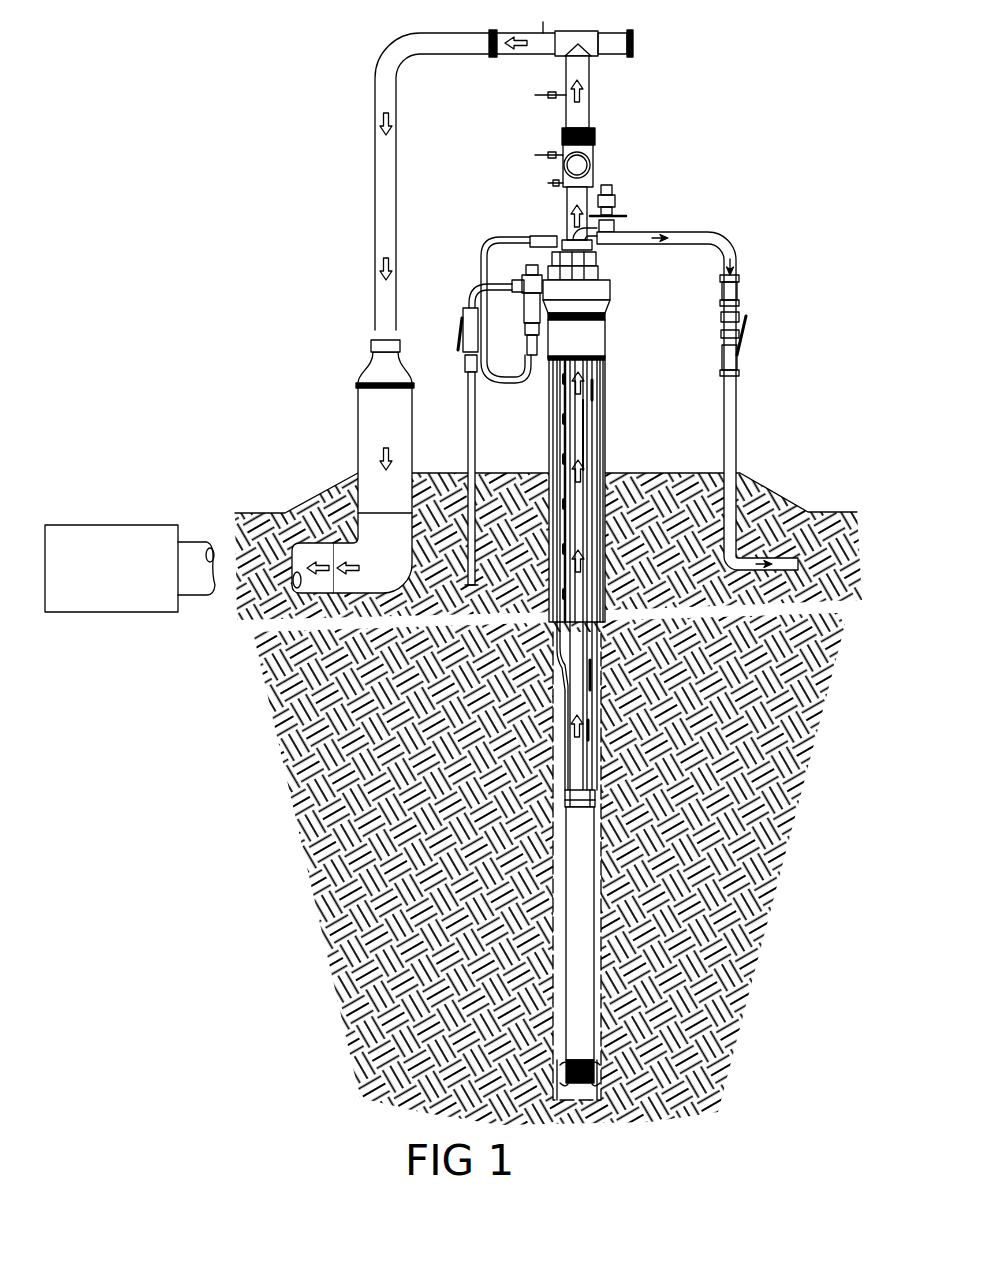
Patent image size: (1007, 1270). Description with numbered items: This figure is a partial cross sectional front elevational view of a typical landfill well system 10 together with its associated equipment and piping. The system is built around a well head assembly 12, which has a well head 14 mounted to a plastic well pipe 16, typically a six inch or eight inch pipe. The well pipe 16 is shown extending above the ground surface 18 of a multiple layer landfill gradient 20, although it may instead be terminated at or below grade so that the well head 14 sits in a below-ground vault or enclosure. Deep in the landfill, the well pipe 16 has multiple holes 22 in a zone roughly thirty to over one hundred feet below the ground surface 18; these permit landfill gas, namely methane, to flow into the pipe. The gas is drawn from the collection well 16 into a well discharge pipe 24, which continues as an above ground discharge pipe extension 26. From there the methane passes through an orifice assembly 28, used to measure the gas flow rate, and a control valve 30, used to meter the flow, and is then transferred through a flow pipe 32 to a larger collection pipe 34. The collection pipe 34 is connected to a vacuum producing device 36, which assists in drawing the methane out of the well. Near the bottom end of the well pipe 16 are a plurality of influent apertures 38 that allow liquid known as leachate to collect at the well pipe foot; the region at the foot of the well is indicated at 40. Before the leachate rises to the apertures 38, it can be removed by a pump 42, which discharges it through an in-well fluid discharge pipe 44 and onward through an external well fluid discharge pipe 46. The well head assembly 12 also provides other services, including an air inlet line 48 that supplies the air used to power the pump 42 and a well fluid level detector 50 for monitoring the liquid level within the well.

The landfill well system 10 is at (775, 253).
The well head assembly 12 is at (658, 326).
The well head 14 is at (602, 300).
The plastic well pipe 16 is at (590, 405).
The ground surface 18 is at (522, 470).
The multiple layer landfill gradient 20 is at (661, 473).
The holes 22 is at (590, 765).
The well discharge pipe 24 is at (593, 380).
The above ground discharge pipe extension 26 is at (568, 225).
The orifice assembly 28 is at (590, 170).
The control valve 30 is at (572, 40).
The flow pipe 32 is at (397, 210).
The collection pipe 34 is at (318, 543).
The vacuum producing device 36 is at (110, 525).
The influent apertures 38 is at (600, 1085).
The well bottom 40 is at (560, 1065).
The pump 42 is at (575, 905).
The in-well fluid discharge pipe 44 is at (590, 463).
The external well fluid discharge pipe 46 is at (738, 402).
The air inlet line 48 is at (468, 437).
The well fluid level detector 50 is at (612, 200).